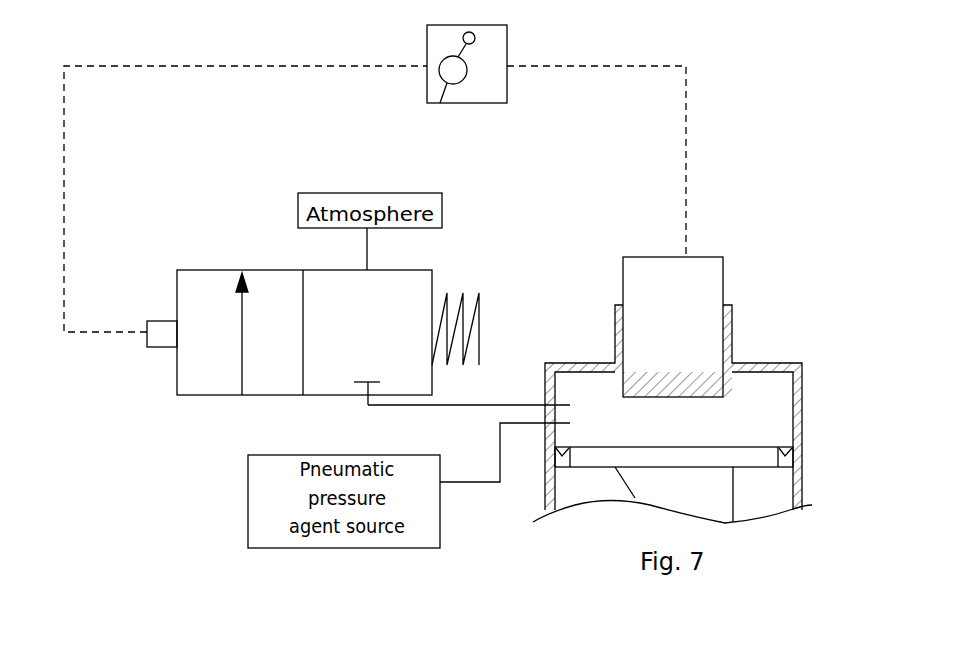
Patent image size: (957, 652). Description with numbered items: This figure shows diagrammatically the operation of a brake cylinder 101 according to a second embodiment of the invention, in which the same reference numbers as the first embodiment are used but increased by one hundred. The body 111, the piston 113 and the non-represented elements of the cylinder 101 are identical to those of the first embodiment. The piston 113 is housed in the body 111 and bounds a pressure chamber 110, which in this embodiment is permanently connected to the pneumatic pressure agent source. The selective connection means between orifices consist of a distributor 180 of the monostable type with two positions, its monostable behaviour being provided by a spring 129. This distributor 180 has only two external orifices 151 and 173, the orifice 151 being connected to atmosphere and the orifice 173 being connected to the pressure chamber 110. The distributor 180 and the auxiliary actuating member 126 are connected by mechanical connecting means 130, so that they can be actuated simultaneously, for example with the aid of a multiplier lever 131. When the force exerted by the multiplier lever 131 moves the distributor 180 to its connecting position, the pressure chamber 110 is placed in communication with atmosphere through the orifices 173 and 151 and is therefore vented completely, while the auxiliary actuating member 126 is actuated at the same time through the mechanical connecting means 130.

The cylinder 101 is at (782, 88).
The pressure chamber 110 is at (638, 433).
The body 111 is at (802, 412).
The piston 113 is at (735, 458).
The auxiliary actuating member 126 is at (650, 263).
The spring 129 is at (475, 300).
The mechanical connecting means 130 is at (129, 56).
The multiplier lever 131 is at (438, 80).
The external orifice 151 is at (367, 269).
The external orifice 173 is at (366, 397).
The distributor 180 is at (146, 298).